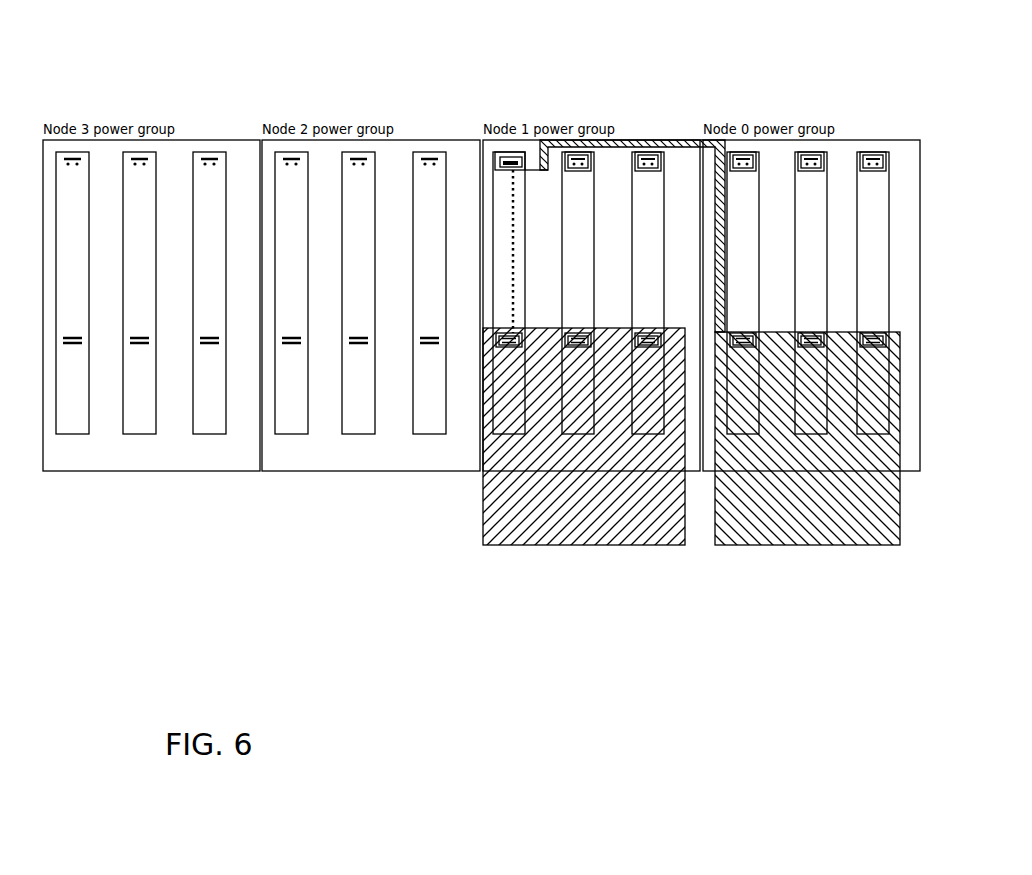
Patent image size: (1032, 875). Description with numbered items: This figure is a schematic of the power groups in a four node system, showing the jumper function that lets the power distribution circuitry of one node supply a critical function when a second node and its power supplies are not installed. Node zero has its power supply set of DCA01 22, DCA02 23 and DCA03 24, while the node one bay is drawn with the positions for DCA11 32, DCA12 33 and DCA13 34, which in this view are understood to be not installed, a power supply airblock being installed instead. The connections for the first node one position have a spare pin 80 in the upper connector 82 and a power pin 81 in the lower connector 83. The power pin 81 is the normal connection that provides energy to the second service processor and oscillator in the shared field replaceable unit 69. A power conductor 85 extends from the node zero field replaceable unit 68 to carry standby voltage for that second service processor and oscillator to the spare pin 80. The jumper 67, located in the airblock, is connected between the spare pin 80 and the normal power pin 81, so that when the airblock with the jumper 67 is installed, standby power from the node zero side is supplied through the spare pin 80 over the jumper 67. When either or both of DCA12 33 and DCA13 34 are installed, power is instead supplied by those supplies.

The DCA01 22 is at (745, 200).
The DCA02 23 is at (812, 212).
The DCA03 24 is at (877, 213).
The DCA11 32 is at (525, 193).
The DCA12 33 is at (592, 203).
The DCA13 34 is at (657, 203).
The jumper 67 is at (516, 302).
The shared field replaceable unit 68 is at (790, 546).
The shared field replaceable unit 69 is at (568, 542).
The spare pin 80 is at (503, 172).
The power pin 81 is at (497, 333).
The upper connector 82 is at (499, 165).
The lower connector 83 is at (498, 342).
The power conductor 85 is at (704, 142).